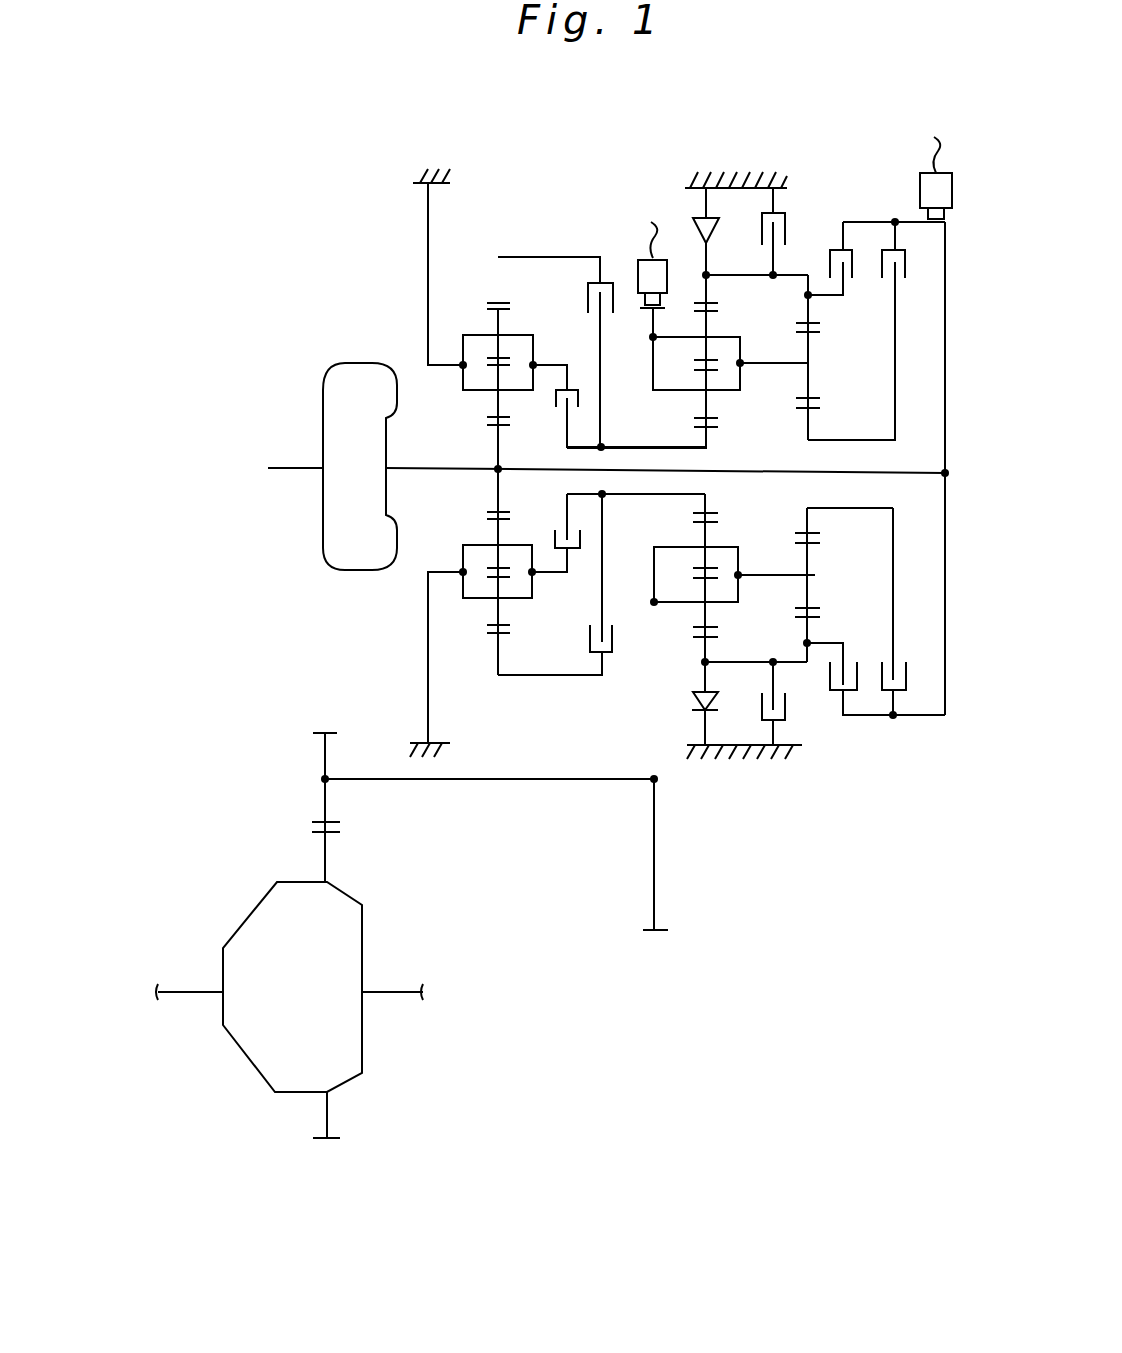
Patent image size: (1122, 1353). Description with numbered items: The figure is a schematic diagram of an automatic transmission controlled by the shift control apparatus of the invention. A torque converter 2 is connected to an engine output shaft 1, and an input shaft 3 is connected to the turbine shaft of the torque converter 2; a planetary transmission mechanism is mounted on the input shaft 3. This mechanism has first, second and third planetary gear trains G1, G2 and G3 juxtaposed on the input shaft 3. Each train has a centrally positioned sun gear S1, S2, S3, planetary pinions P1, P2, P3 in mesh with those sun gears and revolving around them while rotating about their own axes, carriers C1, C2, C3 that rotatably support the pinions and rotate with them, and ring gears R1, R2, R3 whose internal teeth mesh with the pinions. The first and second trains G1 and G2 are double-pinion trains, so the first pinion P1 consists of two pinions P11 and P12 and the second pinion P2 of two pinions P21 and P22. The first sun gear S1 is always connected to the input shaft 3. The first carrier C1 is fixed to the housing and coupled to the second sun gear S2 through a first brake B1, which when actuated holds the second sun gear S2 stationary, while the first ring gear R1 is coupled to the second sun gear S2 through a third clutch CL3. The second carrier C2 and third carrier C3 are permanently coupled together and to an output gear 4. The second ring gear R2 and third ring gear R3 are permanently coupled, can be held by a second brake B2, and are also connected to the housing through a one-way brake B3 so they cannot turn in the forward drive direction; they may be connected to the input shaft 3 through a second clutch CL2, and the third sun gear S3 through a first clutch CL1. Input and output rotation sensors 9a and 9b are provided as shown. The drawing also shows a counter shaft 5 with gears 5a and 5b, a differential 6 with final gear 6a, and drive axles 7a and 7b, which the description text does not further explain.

The engine output shaft 1 is at (290, 469).
The torque converter 2 is at (335, 550).
The input shaft 3 is at (734, 470).
The output gear 4 is at (652, 323).
The counter shaft 5 is at (522, 778).
The counter gear 5a is at (647, 932).
The counter gear 5b is at (338, 732).
The differential gear 6 is at (316, 997).
The final gear 6a is at (340, 1136).
The drive axle 7a is at (398, 984).
The drive axle 7b is at (188, 988).
The input rotation sensor 9a is at (952, 190).
The output rotation sensor 9b is at (638, 272).
The first planetary gear train G1 is at (559, 302).
The second planetary gear train G2 is at (687, 292).
The third planetary gear train G3 is at (842, 289).
The first ring gear R1 is at (499, 291).
The first carrier C1 is at (480, 336).
The first planetary pinion P1 is at (478, 404).
The pinion P11 is at (505, 407).
The pinion P12 is at (508, 336).
The first sun gear S1 is at (493, 446).
The second ring gear R2 is at (712, 306).
The second carrier C2 is at (654, 355).
The second planetary pinion P2 is at (716, 381).
The pinion P21 is at (694, 415).
The pinion P22 is at (712, 331).
The second sun gear S2 is at (718, 432).
The third ring gear R3 is at (816, 326).
The third carrier C3 is at (824, 348).
The third planetary pinion P3 is at (816, 388).
The third sun gear S3 is at (816, 421).
The first brake B1 is at (580, 540).
The second brake B2 is at (786, 700).
The one-way brake B3 is at (695, 698).
The first clutch CL1 is at (907, 680).
The second clutch CL2 is at (828, 680).
The third clutch CL3 is at (614, 652).